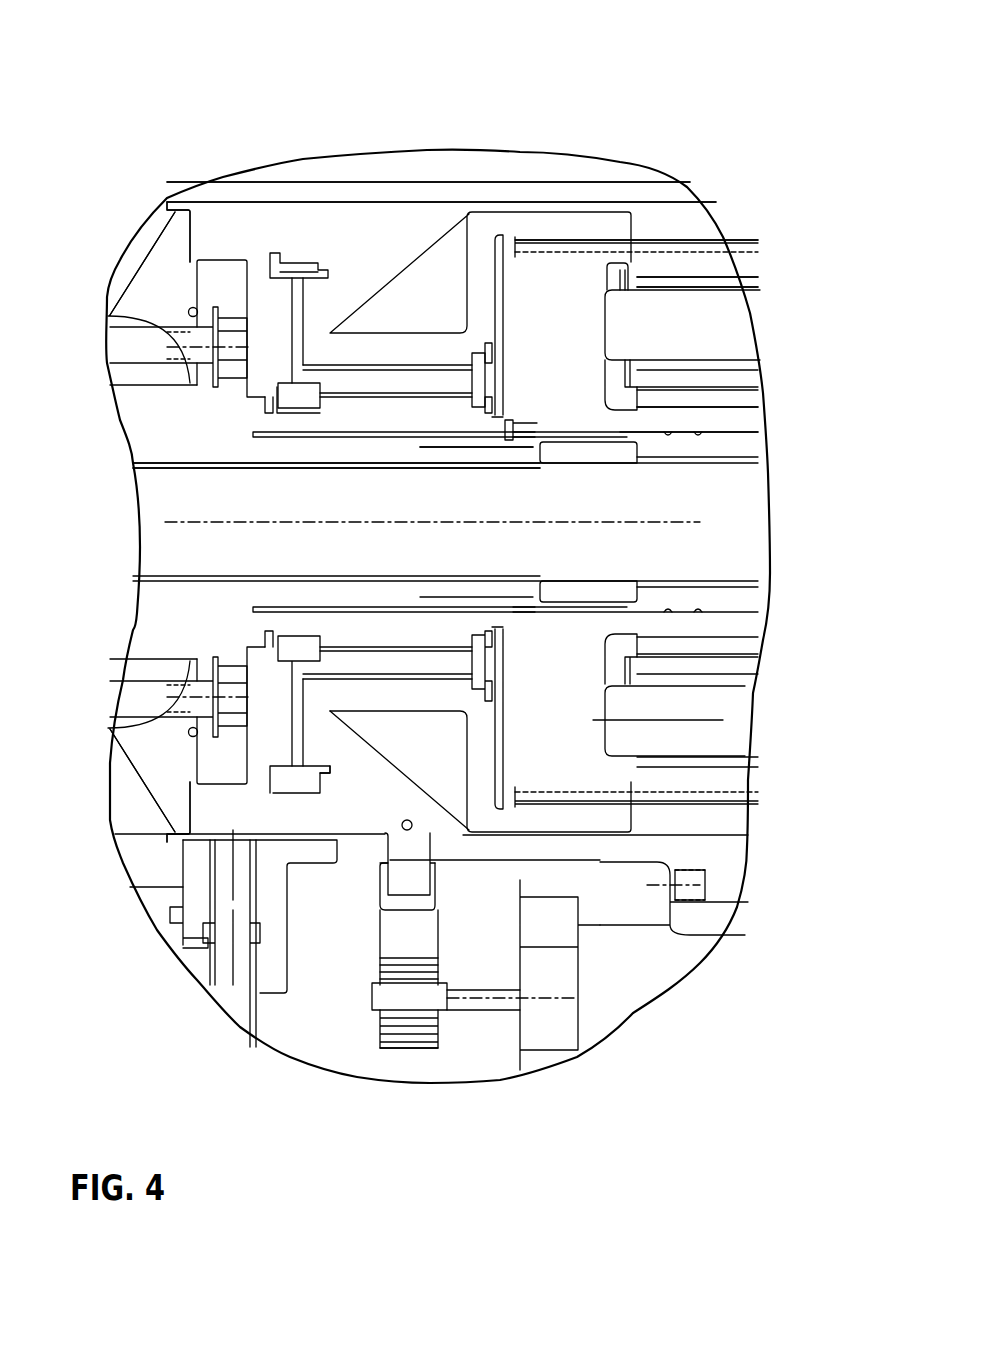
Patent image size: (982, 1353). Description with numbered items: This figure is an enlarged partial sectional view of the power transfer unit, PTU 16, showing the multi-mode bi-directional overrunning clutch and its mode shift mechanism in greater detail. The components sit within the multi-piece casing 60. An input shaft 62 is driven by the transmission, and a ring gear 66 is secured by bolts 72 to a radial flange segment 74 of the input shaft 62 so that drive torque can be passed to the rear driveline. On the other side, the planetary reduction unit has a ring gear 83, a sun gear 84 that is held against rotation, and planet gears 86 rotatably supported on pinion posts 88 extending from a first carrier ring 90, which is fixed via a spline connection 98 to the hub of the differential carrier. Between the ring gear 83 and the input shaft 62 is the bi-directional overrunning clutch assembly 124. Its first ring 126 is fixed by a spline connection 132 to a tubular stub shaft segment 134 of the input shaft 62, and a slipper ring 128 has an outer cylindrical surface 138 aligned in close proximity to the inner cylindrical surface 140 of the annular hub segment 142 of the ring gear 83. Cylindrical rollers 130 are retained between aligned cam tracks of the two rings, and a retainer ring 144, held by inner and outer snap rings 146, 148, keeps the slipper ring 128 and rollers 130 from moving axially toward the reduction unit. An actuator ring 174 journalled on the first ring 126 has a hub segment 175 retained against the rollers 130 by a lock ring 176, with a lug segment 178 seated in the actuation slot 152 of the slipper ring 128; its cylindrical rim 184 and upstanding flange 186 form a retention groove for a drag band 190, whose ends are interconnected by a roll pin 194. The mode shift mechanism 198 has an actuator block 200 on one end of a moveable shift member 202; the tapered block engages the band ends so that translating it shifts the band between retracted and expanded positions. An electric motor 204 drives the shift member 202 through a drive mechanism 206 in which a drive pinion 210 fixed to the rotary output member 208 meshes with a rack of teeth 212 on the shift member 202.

The PTU 16 is at (640, 15).
The multi-piece casing 60 is at (343, 199).
The input shaft 62 is at (157, 420).
The ring gear 66 is at (162, 267).
The bolts 72 is at (170, 337).
The radial flange segment 74 is at (221, 272).
The ring gear 83 is at (578, 222).
The sun gear 84 is at (730, 420).
The planet gears 86 is at (658, 268).
The pinion posts 88 is at (698, 302).
The first carrier ring 90 is at (614, 265).
The spline connection 98 is at (580, 440).
The bi-directional overrunning clutch assembly 124 is at (360, 435).
The first ring 126 is at (389, 416).
The slipper ring 128 is at (371, 370).
The cylindrical rollers 130 is at (350, 660).
The spline connection 132 is at (295, 613).
The tubular stub shaft segment 134 is at (418, 450).
The outer cylindrical surface 138 is at (452, 684).
The inner cylindrical surface 140 is at (441, 372).
The annular hub segment 142 is at (417, 698).
The retainer ring 144 is at (480, 383).
The inner snap ring 146 is at (490, 407).
The outer snap ring 148 is at (495, 343).
The actuation slot 152 is at (312, 680).
The actuator ring 174 is at (301, 314).
The hub segment 175 is at (297, 402).
The lock ring 176 is at (265, 412).
The lug segment 178 is at (287, 665).
The cylindrical rim 184 is at (283, 767).
The upstanding flange 186 is at (263, 257).
The drag band 190 is at (287, 267).
The roll pin 194 is at (401, 824).
The mode shift mechanism 198 is at (450, 1100).
The actuator block 200 is at (430, 898).
The shift member 202 is at (422, 938).
The electric motor 204 is at (553, 1050).
The drive mechanism 206 is at (378, 1040).
The rotary output member 208 is at (478, 1000).
The drive pinion 210 is at (375, 1003).
The rack of teeth 212 is at (400, 1050).